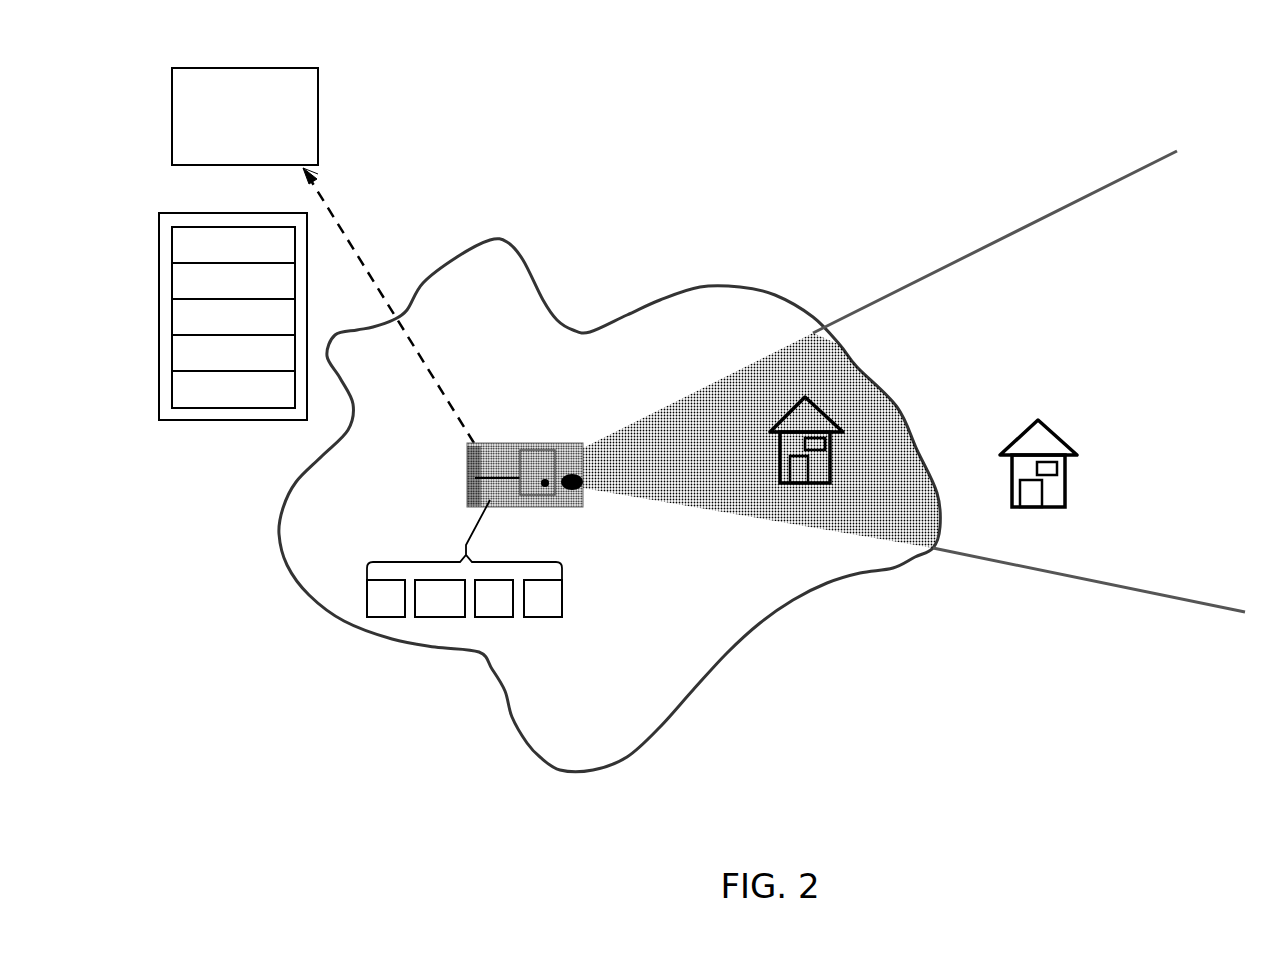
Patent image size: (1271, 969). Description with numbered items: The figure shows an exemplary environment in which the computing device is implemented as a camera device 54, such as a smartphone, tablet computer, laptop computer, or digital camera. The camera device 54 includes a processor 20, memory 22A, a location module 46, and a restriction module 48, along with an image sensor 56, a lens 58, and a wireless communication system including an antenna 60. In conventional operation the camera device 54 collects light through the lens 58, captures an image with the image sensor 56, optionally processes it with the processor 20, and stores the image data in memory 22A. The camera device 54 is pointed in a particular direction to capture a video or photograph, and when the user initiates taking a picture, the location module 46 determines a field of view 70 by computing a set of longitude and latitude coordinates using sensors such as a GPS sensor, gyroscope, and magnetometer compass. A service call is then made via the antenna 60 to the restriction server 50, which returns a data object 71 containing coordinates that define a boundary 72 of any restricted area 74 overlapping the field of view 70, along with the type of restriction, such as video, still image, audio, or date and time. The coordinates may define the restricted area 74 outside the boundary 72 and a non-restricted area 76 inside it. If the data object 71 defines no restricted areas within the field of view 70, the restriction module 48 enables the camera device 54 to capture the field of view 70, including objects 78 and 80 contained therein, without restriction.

The restriction server 50 is at (238, 67).
The data object 71 is at (218, 213).
The boundary 72 is at (508, 245).
The field of view 70 is at (1006, 242).
The restricted area 74 is at (1022, 355).
The non-restricted area 76 is at (707, 463).
The camera device 54 is at (553, 420).
The antenna 60 is at (479, 448).
The image sensor 56 is at (547, 486).
The lens 58 is at (578, 488).
The processor 20 is at (386, 598).
The memory 22A is at (440, 598).
The location module 46 is at (494, 598).
The restriction module 48 is at (543, 598).
The object 78 is at (827, 480).
The object 80 is at (1050, 505).